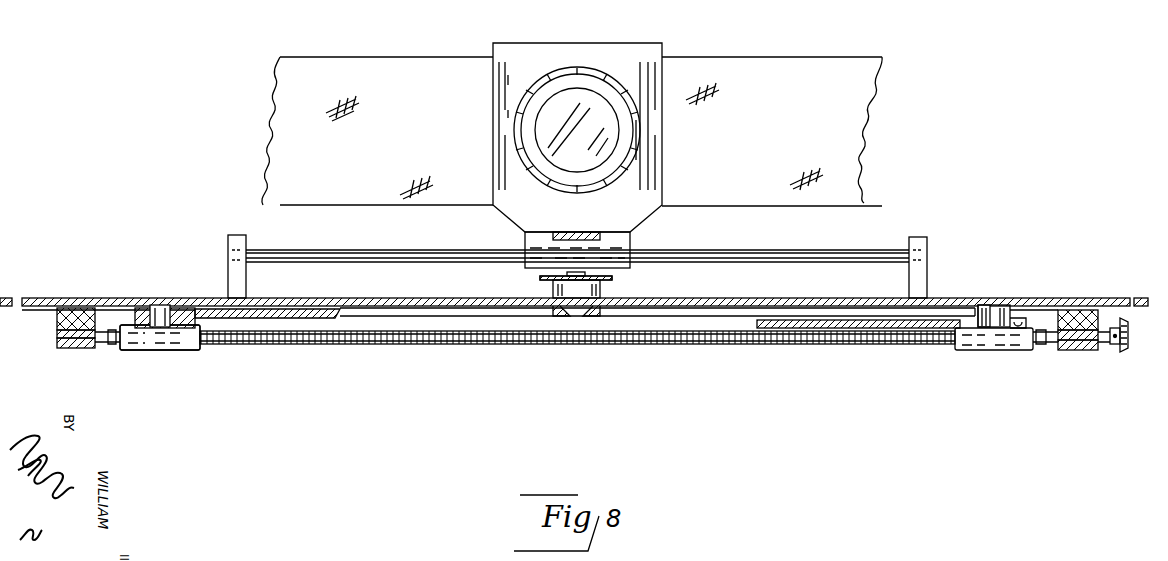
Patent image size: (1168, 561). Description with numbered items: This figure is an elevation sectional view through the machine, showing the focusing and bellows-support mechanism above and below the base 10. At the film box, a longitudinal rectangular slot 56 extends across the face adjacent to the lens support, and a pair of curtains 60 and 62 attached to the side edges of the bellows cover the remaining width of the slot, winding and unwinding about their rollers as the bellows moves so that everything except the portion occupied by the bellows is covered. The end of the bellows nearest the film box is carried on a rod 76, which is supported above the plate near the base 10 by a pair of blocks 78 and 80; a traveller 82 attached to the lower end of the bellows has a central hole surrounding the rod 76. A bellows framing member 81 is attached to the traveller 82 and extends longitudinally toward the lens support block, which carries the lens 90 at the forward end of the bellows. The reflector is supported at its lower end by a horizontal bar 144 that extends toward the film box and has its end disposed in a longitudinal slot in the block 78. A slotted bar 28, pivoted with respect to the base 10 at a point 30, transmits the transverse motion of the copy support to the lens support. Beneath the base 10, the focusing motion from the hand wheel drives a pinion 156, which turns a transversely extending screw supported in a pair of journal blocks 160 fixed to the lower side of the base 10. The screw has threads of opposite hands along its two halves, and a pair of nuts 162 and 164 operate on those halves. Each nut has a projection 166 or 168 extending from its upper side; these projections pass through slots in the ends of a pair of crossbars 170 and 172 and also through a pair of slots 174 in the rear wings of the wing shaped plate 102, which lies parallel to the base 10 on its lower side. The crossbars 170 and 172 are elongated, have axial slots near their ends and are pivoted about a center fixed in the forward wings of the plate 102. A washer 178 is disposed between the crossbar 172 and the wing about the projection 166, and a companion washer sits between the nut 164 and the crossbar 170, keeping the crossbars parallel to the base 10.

The base 10 is at (80, 298).
The slotted bar 28 is at (540, 278).
The pivot point 30 is at (605, 290).
The longitudinal rectangular slot 56 is at (604, 86).
The curtain 60 is at (434, 86).
The curtain 62 is at (728, 82).
The rod 76 is at (396, 252).
The block 78 is at (230, 270).
The block 80 is at (918, 269).
The bellows framing member 81 is at (662, 158).
The traveller 82 is at (618, 250).
The lens 90 is at (580, 158).
The wing shaped plate 102 is at (420, 344).
The horizontal bar 144 is at (556, 234).
The pinion 156 is at (1124, 352).
The journal blocks 160 is at (80, 348).
The nut 162 is at (976, 350).
The nut 164 is at (168, 344).
The projection 166 is at (996, 314).
The projection 168 is at (150, 306).
The crossbar 170 is at (314, 318).
The crossbar 172 is at (780, 328).
The slots 174 is at (180, 306).
The washer 178 is at (1020, 324).